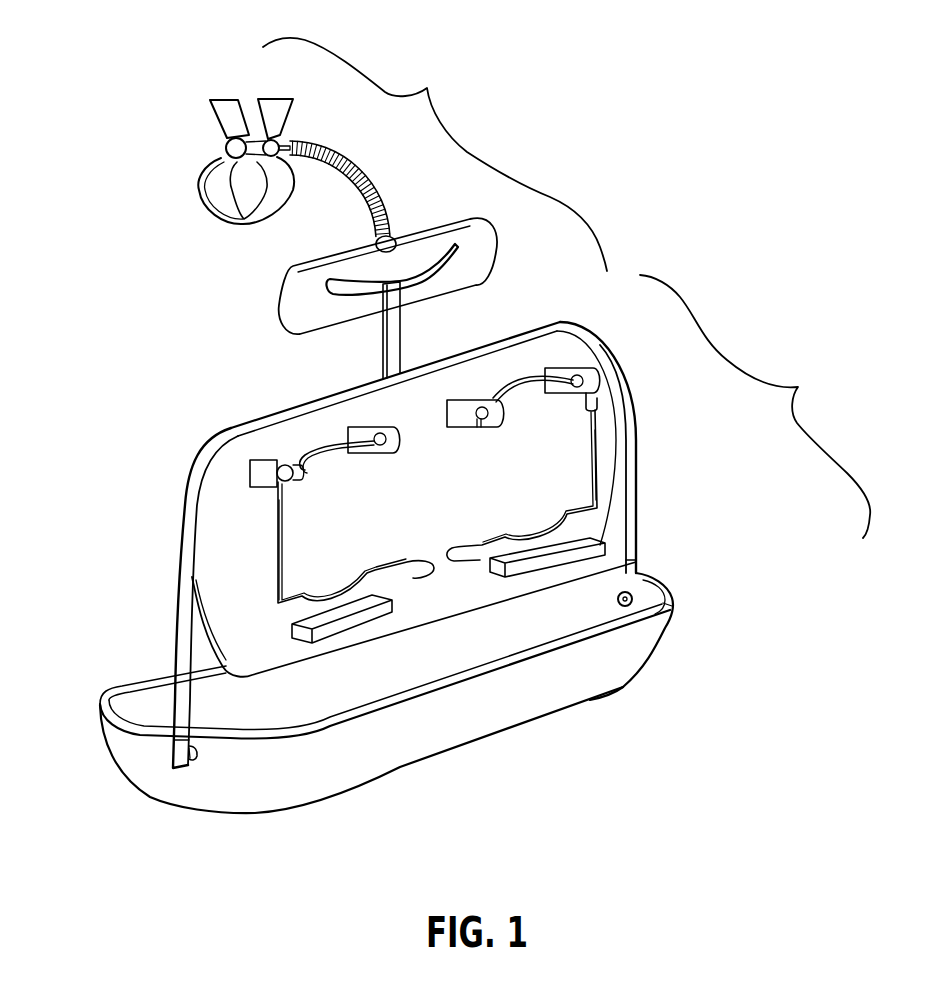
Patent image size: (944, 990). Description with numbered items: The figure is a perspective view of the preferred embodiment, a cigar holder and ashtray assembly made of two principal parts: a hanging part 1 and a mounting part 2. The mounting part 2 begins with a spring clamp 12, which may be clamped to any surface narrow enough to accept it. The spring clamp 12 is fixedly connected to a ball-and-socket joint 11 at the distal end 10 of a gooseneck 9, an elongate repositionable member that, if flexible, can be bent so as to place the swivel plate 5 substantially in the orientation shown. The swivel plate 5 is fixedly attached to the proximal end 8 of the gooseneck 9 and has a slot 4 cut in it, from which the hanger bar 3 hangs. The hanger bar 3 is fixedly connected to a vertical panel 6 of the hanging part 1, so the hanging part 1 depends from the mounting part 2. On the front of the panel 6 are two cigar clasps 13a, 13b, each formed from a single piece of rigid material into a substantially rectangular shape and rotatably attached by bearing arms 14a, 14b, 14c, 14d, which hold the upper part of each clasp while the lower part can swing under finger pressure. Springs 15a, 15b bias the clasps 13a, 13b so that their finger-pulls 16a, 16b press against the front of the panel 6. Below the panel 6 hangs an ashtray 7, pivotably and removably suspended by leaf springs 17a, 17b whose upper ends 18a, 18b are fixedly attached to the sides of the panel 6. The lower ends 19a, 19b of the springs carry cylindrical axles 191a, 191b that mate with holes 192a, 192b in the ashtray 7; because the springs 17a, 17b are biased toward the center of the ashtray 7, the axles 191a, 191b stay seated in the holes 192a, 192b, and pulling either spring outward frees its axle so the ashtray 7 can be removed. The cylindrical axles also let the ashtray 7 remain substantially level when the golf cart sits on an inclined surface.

The hanging part 1 is at (755, 406).
The mounting part 2 is at (435, 154).
The hanger bar 3 is at (393, 337).
The slot 4 is at (440, 260).
The swivel plate 5 is at (460, 268).
The vertical panel 6 is at (612, 418).
The ashtray 7 is at (640, 653).
The proximal end 8 is at (395, 231).
The gooseneck 9 is at (357, 168).
The distal end 10 is at (237, 163).
The ball-and-socket joint 11 is at (230, 138).
The spring clamp 12 is at (228, 110).
The cigar clasp 13a is at (597, 463).
The cigar clasp 13b is at (277, 547).
The bearing arm 14a is at (567, 378).
The bearing arm 14b is at (466, 410).
The bearing arm 14c is at (365, 430).
The bearing arm 14d is at (257, 475).
The spring 15a is at (597, 398).
The spring 15b is at (278, 503).
The finger-pull 16a is at (478, 558).
The finger-pull 16b is at (413, 578).
The leaf spring 17a is at (629, 520).
The leaf spring 17b is at (180, 696).
The upper end 18a is at (634, 437).
The upper end 18b is at (192, 573).
The lower end 19a is at (636, 572).
The lower end 19b is at (180, 757).
The cylindrical axle 191a is at (633, 598).
The cylindrical axle 191b is at (197, 753).
The hole 192a is at (673, 604).
The hole 192b is at (192, 753).